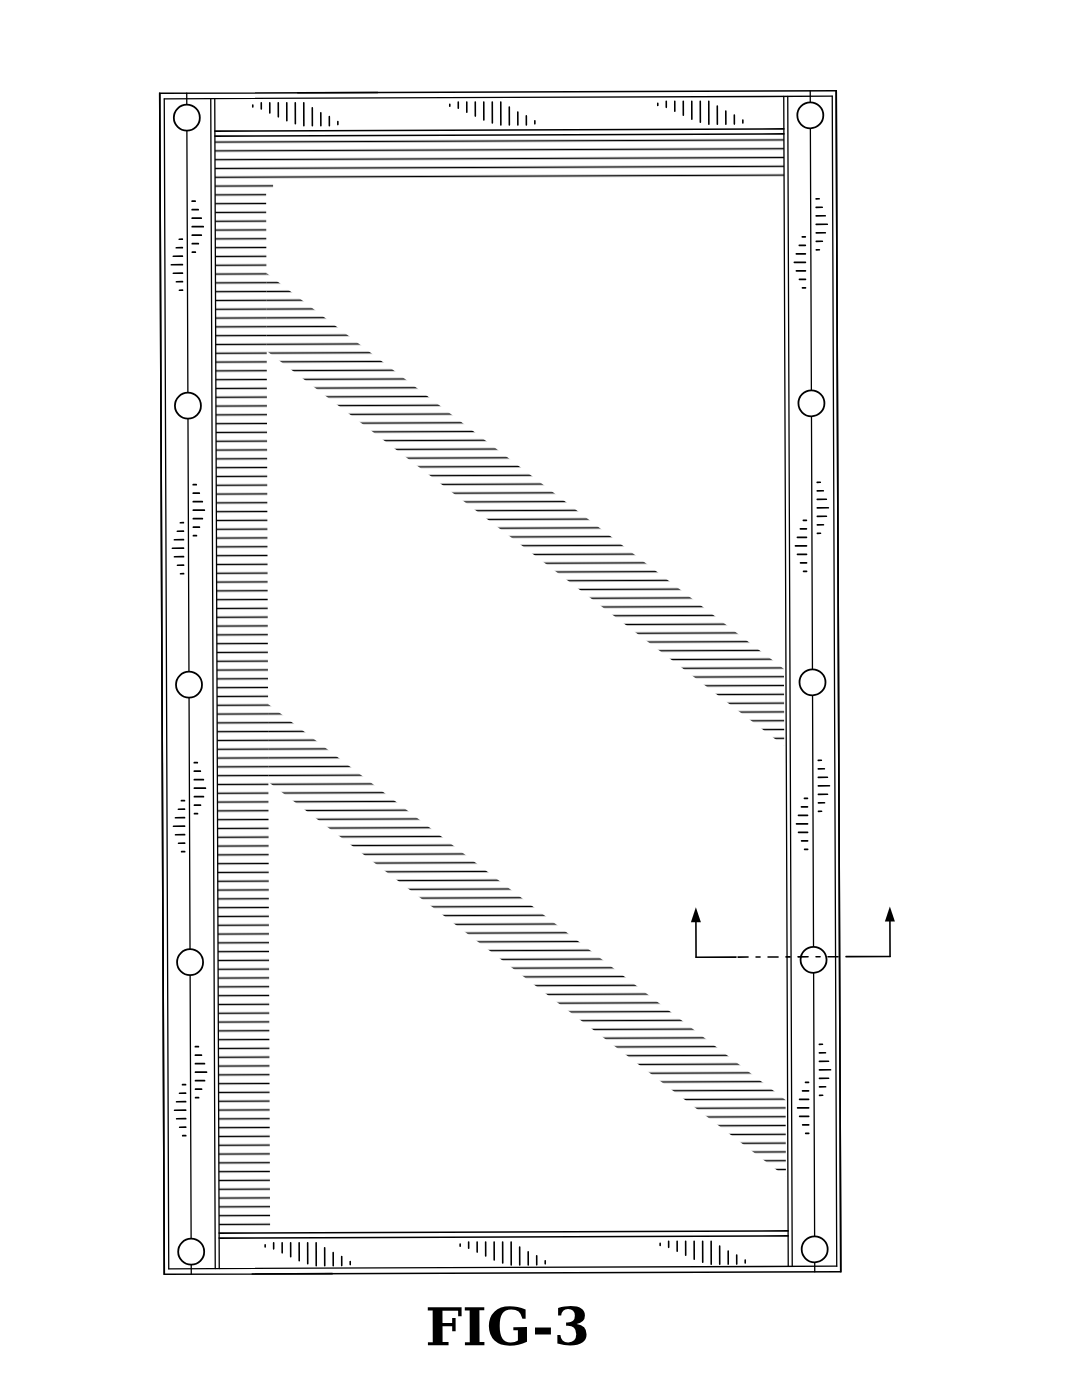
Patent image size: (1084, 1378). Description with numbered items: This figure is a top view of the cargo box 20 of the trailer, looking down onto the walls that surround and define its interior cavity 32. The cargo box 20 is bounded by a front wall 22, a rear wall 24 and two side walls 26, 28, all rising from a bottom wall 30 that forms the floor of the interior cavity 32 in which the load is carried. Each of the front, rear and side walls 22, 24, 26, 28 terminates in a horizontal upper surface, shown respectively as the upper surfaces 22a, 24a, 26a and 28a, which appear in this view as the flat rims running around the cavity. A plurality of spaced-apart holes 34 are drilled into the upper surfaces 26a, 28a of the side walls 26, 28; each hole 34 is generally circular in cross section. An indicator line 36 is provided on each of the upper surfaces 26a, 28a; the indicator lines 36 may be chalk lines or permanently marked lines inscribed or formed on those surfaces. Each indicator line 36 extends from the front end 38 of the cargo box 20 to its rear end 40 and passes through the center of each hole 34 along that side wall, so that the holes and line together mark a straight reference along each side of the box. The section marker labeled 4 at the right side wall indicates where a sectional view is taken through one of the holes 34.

The cargo box 20 is at (853, 557).
The front wall 22 is at (591, 90).
The horizontal upper surface of front wall 22a is at (428, 108).
The rear wall 24 is at (660, 1277).
The horizontal upper surface of rear wall 24a is at (428, 1250).
The side wall 26 is at (163, 910).
The horizontal upper surface of side wall 26a is at (178, 1047).
The side wall 28 is at (842, 289).
The horizontal upper surface of side wall 28a is at (825, 350).
The bottom wall 30 is at (520, 688).
The interior cavity 32 is at (738, 462).
The holes 34 is at (189, 117).
The indicator line 36 is at (188, 338).
The front end 38 is at (335, 93).
The rear end 40 is at (290, 1275).
The section line 4- 4 is at (792, 917).